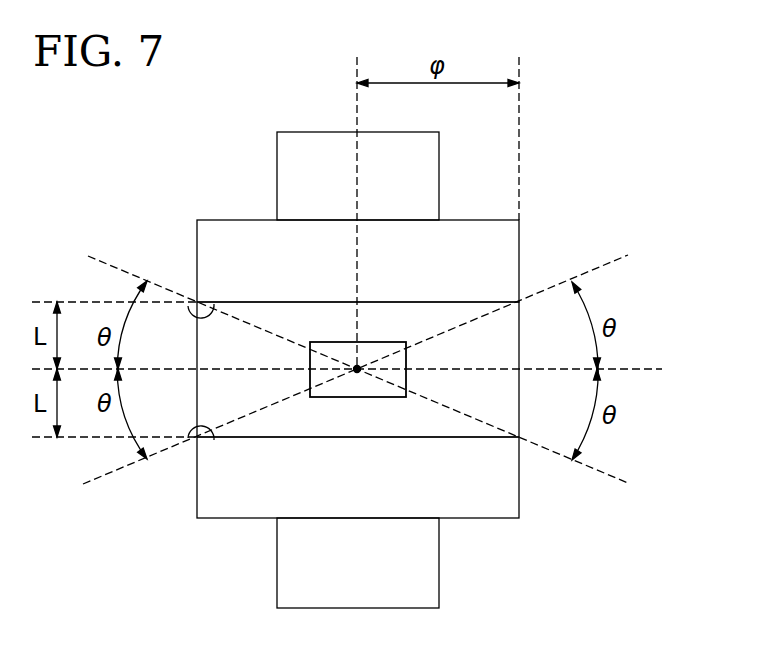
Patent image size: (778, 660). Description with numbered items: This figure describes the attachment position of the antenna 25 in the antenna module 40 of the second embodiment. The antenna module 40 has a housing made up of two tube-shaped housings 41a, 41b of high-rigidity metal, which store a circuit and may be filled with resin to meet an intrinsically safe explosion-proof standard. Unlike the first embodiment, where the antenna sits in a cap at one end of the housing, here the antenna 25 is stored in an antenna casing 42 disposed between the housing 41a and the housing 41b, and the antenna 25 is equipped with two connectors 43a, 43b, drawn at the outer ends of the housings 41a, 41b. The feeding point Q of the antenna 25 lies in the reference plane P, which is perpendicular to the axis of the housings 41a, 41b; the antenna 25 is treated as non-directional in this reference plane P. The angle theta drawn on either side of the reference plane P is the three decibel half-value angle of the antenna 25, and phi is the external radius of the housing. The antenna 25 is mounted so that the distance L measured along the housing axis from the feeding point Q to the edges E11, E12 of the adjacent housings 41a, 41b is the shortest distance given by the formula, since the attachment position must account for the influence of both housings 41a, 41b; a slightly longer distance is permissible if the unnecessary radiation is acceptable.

The antenna 25 is at (325, 342).
The antenna module 40 is at (355, 348).
The housing 41a is at (519, 248).
The housing 41b is at (519, 487).
The antenna casing 42 is at (502, 345).
The connector 43a is at (305, 131).
The connector 43b is at (439, 563).
The first edge E11 is at (188, 306).
The second edge E12 is at (188, 438).
The feeding point Q is at (357, 369).
The reference plane P is at (662, 369).